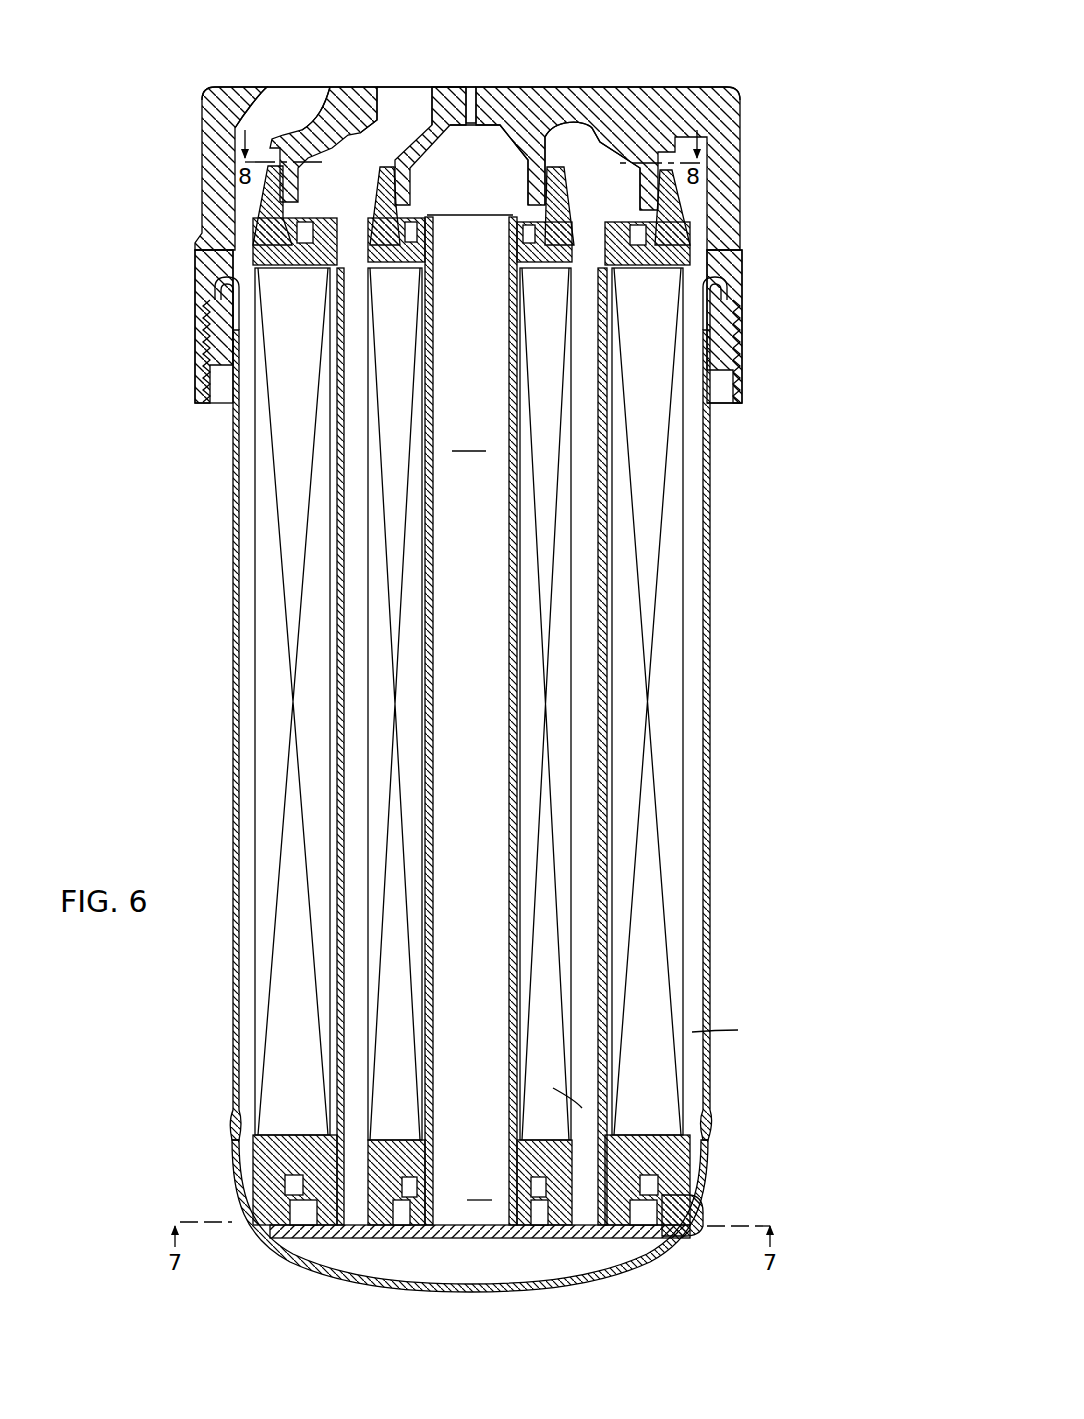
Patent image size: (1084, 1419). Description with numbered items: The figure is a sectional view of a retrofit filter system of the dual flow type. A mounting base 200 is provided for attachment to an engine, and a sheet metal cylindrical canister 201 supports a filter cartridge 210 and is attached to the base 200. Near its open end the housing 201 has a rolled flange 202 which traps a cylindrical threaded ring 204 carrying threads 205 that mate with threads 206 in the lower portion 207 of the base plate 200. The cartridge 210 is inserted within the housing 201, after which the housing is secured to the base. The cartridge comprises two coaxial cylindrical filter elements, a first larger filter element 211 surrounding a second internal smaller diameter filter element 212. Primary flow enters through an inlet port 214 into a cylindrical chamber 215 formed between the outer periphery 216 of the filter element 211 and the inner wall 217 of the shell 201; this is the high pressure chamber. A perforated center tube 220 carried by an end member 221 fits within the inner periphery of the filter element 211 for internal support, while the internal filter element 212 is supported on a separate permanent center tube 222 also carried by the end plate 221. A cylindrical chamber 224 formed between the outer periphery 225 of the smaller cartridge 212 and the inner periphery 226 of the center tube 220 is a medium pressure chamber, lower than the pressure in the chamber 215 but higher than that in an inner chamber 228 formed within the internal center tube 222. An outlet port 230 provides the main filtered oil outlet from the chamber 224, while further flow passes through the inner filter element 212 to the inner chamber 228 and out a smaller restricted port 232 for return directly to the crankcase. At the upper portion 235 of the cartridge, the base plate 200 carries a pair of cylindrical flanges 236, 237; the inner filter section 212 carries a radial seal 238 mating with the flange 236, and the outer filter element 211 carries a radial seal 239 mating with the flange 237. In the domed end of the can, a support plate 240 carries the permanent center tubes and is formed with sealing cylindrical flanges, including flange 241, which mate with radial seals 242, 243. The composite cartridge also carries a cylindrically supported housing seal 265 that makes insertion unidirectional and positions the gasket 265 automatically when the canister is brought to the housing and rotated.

The mounting base 200 is at (622, 100).
The cylindrical canister 201 is at (712, 668).
The rolled flange 202 is at (732, 275).
The cylindrical threaded ring 204 is at (723, 345).
The threads 205 is at (738, 355).
The threads 206 is at (720, 403).
The lower portion 207 is at (743, 392).
The filter cartridge 210 is at (682, 608).
The first larger filter element 211 is at (665, 815).
The second internal filter element 212 is at (543, 960).
The inlet port 214 is at (284, 108).
The cylindrical chamber 215 is at (248, 462).
The outer periphery 216 is at (255, 522).
The inner wall 217 is at (236, 605).
The perforated center tube 220 is at (345, 855).
The end member 221 is at (442, 1237).
The permanent center tube 222 is at (520, 905).
The cylindrical chamber 224 is at (583, 512).
The outer periphery 225 is at (570, 555).
The inner periphery 226 is at (598, 645).
The inner chamber 228 is at (471, 743).
The outlet port 230 is at (400, 105).
The restricted port 232 is at (471, 88).
The upper portion 235 is at (765, 237).
The cylindrical flange 236 is at (410, 185).
The cylindrical flange 237 is at (640, 193).
The radial seal 238 is at (380, 183).
The radial seal 239 is at (680, 207).
The support plate 240 is at (410, 1195).
The sealing cylindrical flange 241 is at (298, 1200).
The radial seal 242 is at (552, 1220).
The radial seal 243 is at (680, 1213).
The housing seal 265 is at (200, 250).